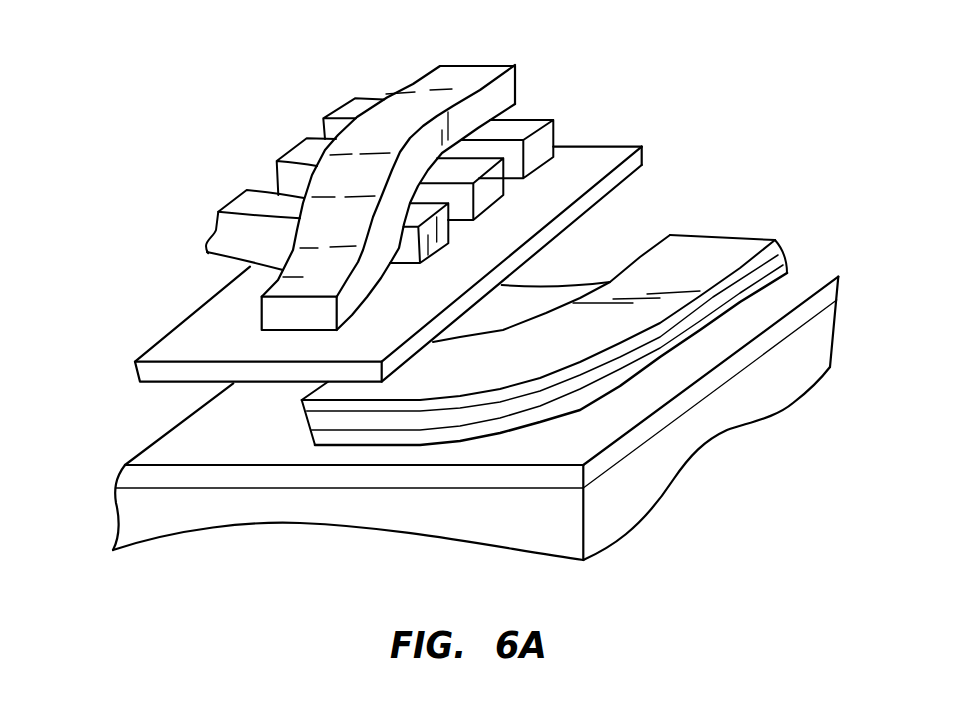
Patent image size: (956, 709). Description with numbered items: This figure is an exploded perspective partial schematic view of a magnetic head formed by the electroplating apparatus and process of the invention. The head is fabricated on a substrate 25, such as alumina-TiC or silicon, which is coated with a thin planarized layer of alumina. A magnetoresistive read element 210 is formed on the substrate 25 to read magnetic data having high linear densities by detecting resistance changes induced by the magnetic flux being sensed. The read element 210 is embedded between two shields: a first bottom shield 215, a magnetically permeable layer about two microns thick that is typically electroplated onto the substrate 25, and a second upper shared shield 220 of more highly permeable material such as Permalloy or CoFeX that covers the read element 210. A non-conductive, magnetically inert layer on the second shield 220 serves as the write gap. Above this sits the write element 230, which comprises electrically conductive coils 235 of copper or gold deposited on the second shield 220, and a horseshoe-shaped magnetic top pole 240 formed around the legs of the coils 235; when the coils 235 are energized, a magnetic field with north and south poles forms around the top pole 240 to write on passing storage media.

The substrate 25 is at (547, 532).
The magnetoresistive read element 210 is at (731, 197).
The first bottom shield 215 is at (146, 450).
The second upper (shared) shield 220 is at (141, 369).
The write element 230 is at (361, 165).
The electrically conductive coils 235 is at (284, 160).
The horseshoe-shaped magnetic top pole 240 is at (465, 66).